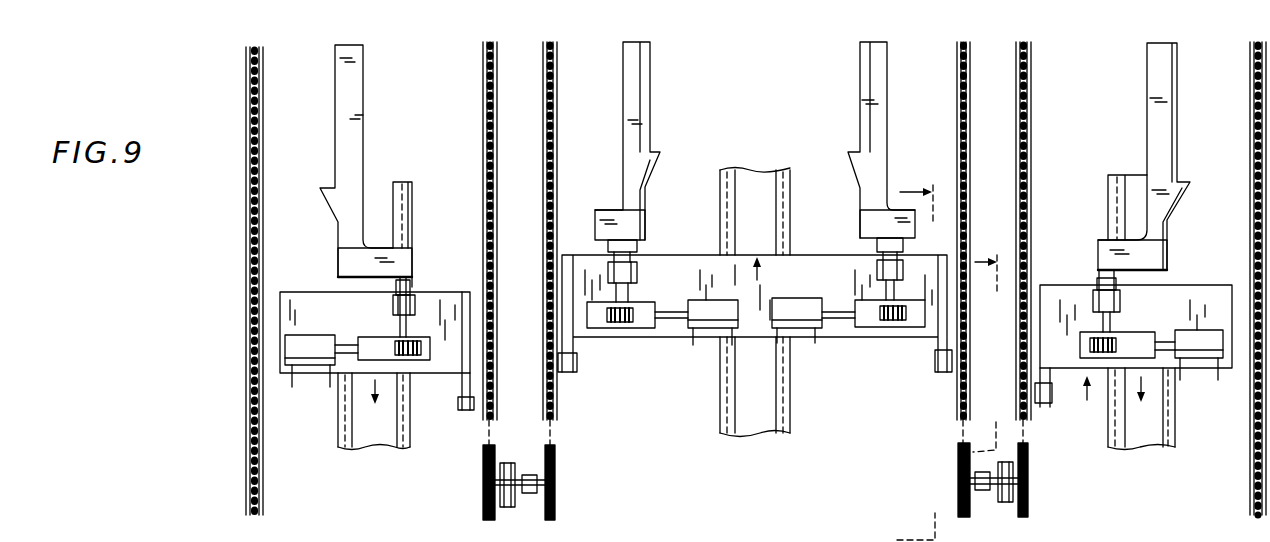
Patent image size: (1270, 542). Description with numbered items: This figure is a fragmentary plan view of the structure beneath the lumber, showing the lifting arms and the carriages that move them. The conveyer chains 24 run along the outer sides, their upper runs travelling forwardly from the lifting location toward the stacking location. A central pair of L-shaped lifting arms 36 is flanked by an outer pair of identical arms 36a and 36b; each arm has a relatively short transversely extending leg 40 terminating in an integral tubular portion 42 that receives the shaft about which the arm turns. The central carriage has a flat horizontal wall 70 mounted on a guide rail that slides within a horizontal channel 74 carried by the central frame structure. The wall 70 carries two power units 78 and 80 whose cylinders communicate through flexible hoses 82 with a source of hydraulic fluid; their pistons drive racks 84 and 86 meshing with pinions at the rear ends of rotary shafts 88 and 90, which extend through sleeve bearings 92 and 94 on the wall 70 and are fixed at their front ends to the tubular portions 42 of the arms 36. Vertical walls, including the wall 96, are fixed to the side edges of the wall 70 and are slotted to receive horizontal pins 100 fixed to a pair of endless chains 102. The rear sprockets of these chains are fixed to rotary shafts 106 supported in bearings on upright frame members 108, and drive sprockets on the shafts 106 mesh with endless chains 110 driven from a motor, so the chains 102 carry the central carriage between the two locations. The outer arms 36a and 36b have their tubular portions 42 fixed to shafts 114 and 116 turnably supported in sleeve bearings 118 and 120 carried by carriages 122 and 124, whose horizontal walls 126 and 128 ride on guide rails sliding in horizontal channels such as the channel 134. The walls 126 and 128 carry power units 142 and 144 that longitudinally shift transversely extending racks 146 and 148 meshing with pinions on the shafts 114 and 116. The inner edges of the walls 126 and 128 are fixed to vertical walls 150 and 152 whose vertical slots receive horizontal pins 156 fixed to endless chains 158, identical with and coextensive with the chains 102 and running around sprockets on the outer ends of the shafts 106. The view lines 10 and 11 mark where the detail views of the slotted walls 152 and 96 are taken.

The section line 10 is at (990, 261).
The section line 11 is at (911, 350).
The chains 24 is at (248, 437).
The lifting arms 36 is at (664, 107).
The outer lifting arm 36a is at (367, 172).
The outer lifting arm 36b is at (1184, 110).
The transversely extending leg 40 is at (380, 250).
The tubular portion 42 is at (413, 250).
The horizontal wall 70 is at (675, 268).
The horizontal channel 74 is at (722, 422).
The power unit 78 is at (730, 290).
The power unit 80 is at (806, 305).
The flexible hoses 82 is at (695, 345).
The rack 84 is at (672, 320).
The rack 86 is at (837, 312).
The rotary shaft 88 is at (638, 265).
The rotary shaft 90 is at (880, 257).
The sleeve bearing 92 is at (612, 268).
The sleeve bearing 94 is at (575, 256).
The vertical wall 96 is at (942, 338).
The horizontal pins 100 is at (560, 378).
The endless chains 102 is at (544, 110).
The rotary shafts 106 is at (556, 485).
The upright frame members 108 is at (527, 475).
The endless chains 110 is at (508, 507).
The shaft 114 is at (398, 283).
The shaft 116 is at (1095, 288).
The sleeve bearing 118 is at (403, 312).
The sleeve bearing 120 is at (1120, 300).
The carriage 122 is at (433, 388).
The carriage 124 is at (1120, 409).
The horizontal wall 126 is at (300, 292).
The horizontal wall 128 is at (1213, 300).
The horizontal channel 134 is at (340, 440).
The power unit 142 is at (285, 350).
The power unit 144 is at (1210, 352).
The rack 146 is at (428, 340).
The rack 148 is at (1140, 336).
The vertical wall 150 is at (470, 295).
The vertical wall 152 is at (1045, 405).
The horizontal pins 156 is at (472, 410).
The endless chains 158 is at (484, 98).